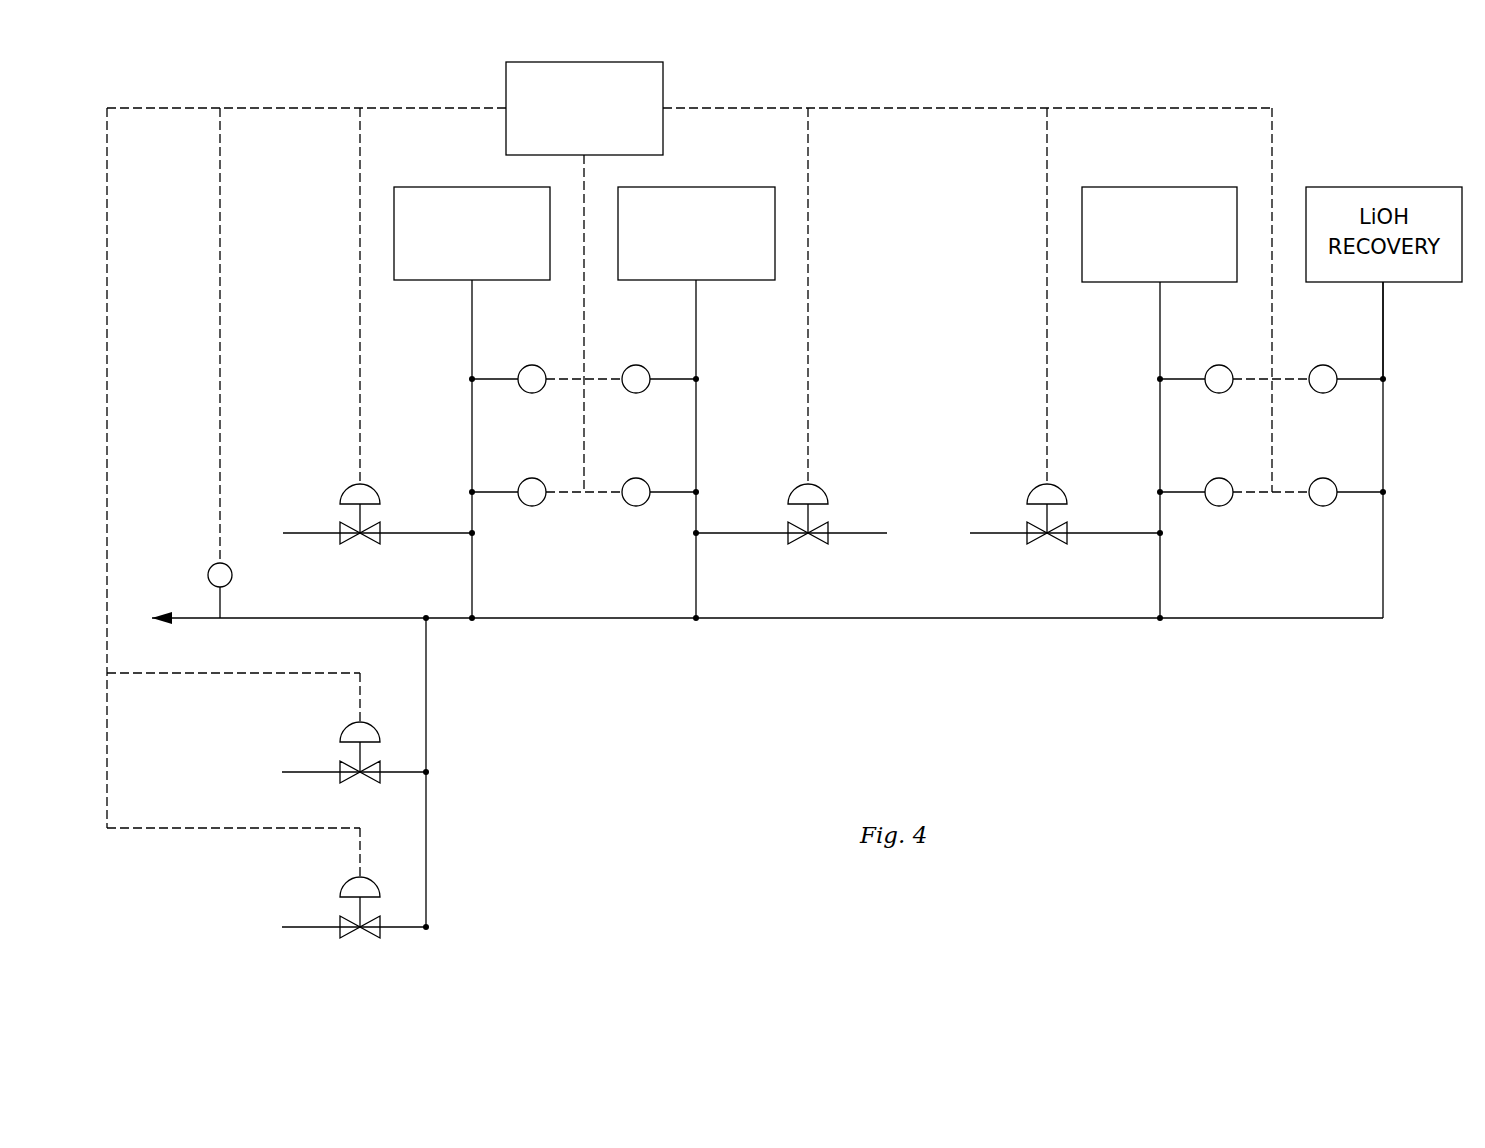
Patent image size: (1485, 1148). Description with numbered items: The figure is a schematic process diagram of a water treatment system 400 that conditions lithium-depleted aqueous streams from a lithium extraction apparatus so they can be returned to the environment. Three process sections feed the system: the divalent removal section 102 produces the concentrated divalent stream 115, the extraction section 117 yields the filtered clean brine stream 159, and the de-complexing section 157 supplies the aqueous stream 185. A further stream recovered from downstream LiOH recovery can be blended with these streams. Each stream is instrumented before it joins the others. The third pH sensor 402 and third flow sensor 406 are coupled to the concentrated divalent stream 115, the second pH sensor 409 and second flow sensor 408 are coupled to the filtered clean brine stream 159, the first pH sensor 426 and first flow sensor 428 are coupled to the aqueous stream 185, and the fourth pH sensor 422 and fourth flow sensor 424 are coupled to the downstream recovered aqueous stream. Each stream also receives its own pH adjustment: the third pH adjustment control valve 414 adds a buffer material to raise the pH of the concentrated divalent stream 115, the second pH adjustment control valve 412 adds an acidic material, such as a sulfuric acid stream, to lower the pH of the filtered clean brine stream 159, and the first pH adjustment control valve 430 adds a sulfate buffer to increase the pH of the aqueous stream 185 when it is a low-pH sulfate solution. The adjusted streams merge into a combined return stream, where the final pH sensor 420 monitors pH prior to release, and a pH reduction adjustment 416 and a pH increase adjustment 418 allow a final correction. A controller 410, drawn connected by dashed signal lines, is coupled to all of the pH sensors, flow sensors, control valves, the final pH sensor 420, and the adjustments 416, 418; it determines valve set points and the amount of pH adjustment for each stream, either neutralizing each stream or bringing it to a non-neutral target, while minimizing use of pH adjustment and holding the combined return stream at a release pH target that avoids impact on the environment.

The water treatment system 400 is at (1200, 716).
The controller 410 is at (584, 108).
The divalent removal section 102 is at (472, 233).
The extraction section 117 is at (696, 233).
The de-complexing section 157 is at (1159, 234).
The concentrated divalent stream 115 is at (472, 351).
The filtered clean brine stream 159 is at (696, 351).
The aqueous stream 185 is at (1160, 351).
The third pH sensor 402 is at (532, 364).
The second pH sensor 409 is at (637, 364).
The third flow sensor 406 is at (532, 477).
The second flow sensor 408 is at (637, 477).
The first pH sensor 426 is at (1219, 364).
The fourth pH sensor 422 is at (1324, 364).
The first flow sensor 428 is at (1219, 477).
The fourth flow sensor 424 is at (1324, 477).
The third pH adjustment control valve 414 is at (346, 492).
The second pH adjustment control valve 412 is at (822, 492).
The first pH adjustment control valve 430 is at (1034, 492).
The pH reduction adjustment 416 is at (346, 730).
The pH increase adjustment 418 is at (346, 885).
The final pH sensor 420 is at (232, 575).